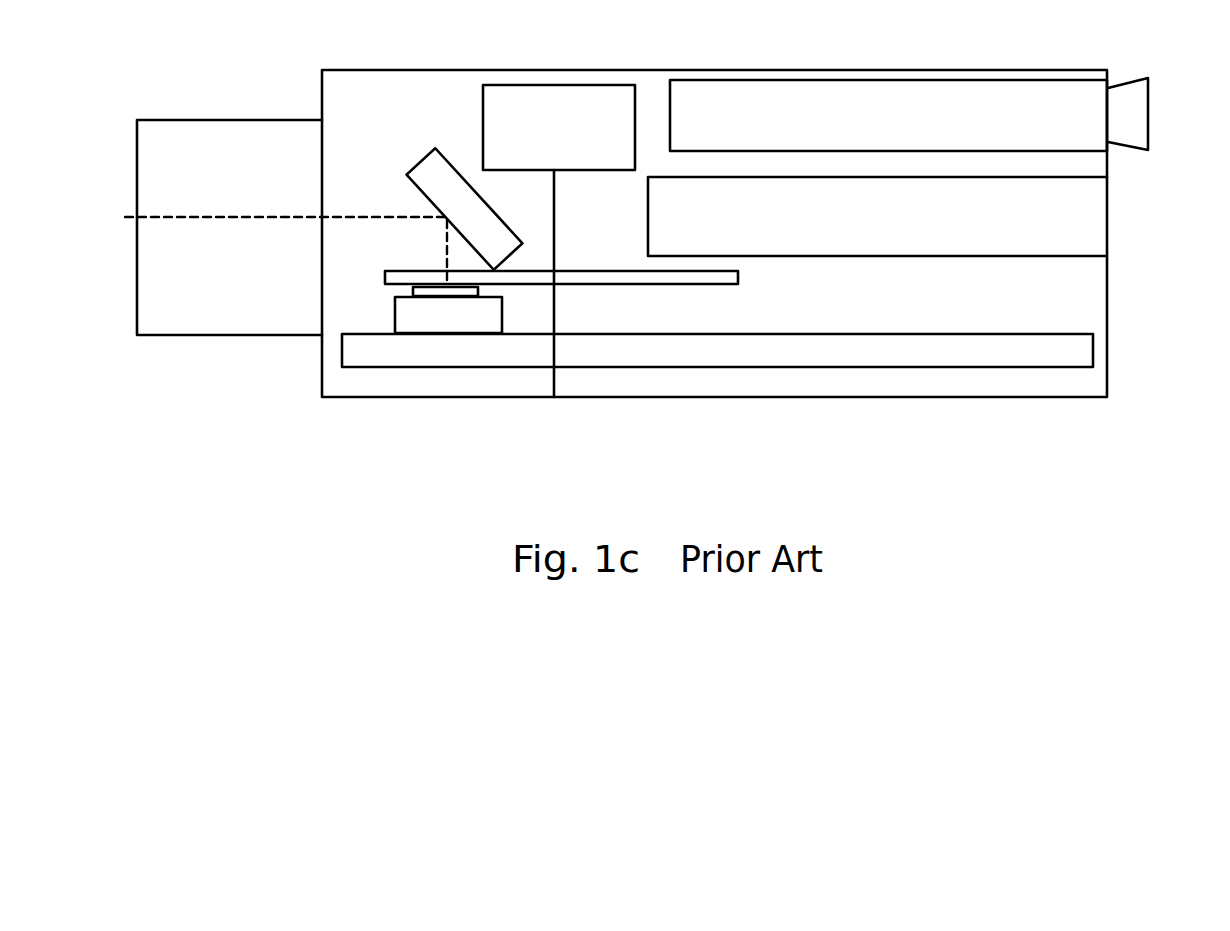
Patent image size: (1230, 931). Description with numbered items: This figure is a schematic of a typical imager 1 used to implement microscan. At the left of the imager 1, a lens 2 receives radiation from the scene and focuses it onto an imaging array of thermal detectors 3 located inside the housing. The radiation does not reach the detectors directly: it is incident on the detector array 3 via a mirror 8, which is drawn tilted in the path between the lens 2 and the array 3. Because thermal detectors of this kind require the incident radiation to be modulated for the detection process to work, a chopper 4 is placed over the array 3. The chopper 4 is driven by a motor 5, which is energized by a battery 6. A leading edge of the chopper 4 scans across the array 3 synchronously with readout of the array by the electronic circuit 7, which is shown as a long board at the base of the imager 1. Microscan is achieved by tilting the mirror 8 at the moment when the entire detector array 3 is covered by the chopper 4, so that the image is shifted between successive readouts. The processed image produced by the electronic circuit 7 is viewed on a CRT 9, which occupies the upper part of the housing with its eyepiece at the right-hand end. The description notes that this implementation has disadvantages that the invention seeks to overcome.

The imager 1 is at (792, 400).
The lens 2 is at (150, 335).
The imaging array of thermal detectors 3 is at (440, 298).
The chopper 4 is at (384, 282).
The motor 5 is at (560, 86).
The battery 6 is at (1082, 213).
The electronic circuit 7 is at (513, 366).
The mirror 8 is at (432, 151).
The CRT 9 is at (753, 81).